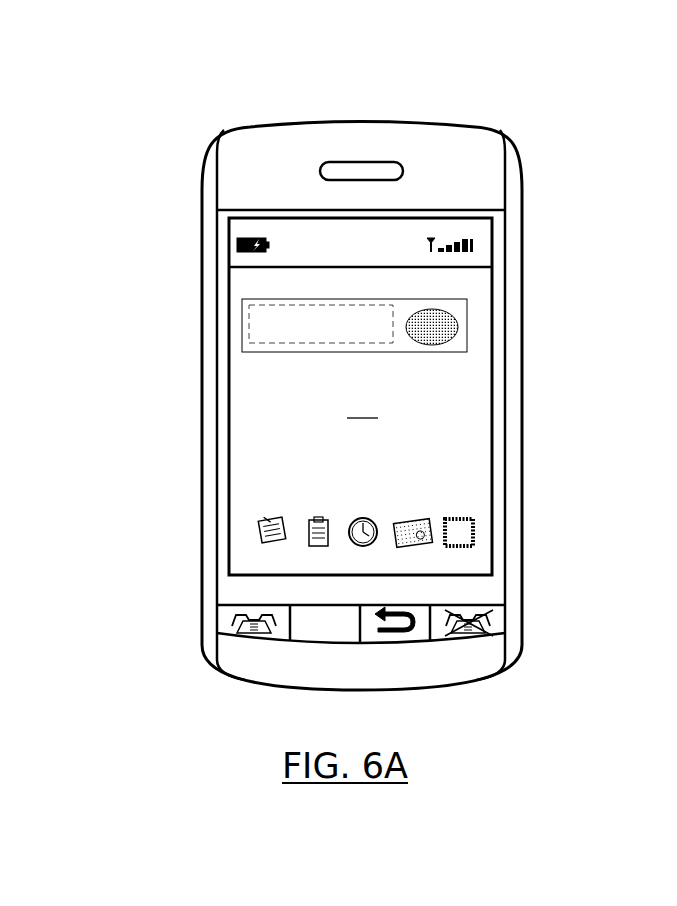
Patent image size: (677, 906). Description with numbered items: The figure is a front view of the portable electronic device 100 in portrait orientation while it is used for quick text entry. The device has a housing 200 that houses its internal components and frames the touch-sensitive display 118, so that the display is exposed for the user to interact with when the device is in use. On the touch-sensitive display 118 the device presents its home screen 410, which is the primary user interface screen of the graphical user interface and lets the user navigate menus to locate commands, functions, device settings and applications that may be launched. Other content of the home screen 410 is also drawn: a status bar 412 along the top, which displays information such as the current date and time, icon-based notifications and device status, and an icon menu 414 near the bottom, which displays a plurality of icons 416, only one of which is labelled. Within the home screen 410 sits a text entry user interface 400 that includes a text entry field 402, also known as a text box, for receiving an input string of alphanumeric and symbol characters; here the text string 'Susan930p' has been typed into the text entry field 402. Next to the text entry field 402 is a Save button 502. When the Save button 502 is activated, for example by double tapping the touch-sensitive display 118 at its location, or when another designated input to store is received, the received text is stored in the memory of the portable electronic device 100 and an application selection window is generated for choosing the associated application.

The portable electronic device 100 is at (341, 388).
The touch-sensitive display 118 is at (340, 409).
The housing 200 is at (510, 548).
The text entry user interface 400 is at (340, 365).
The text entry field 402 is at (297, 343).
The home screen 410 is at (361, 409).
The status bar 412 is at (488, 248).
The icon menu 414 is at (270, 559).
The icon 416 is at (270, 522).
The Save button 502 is at (458, 327).